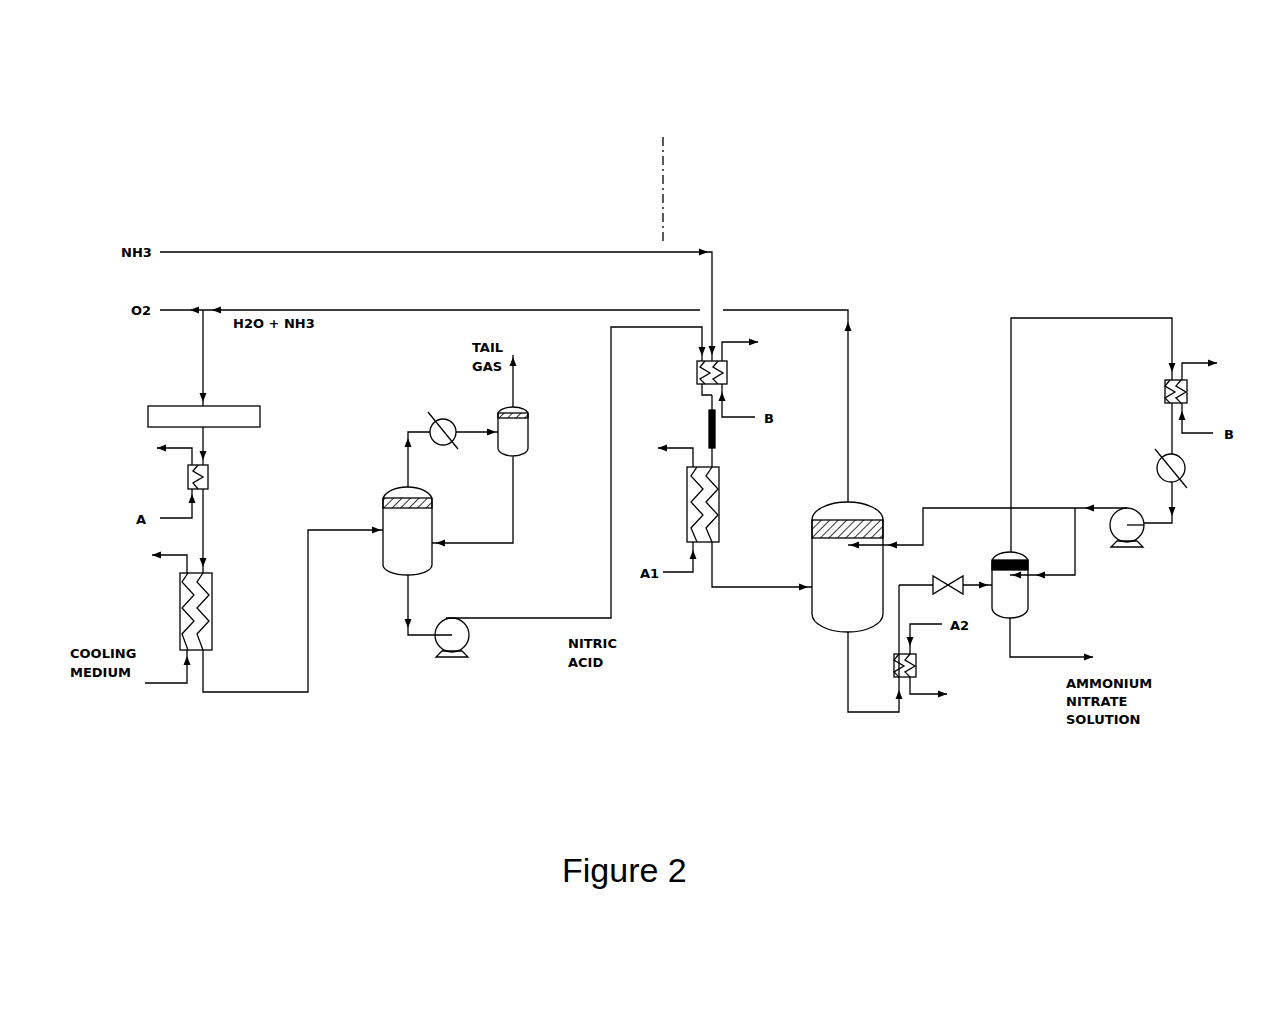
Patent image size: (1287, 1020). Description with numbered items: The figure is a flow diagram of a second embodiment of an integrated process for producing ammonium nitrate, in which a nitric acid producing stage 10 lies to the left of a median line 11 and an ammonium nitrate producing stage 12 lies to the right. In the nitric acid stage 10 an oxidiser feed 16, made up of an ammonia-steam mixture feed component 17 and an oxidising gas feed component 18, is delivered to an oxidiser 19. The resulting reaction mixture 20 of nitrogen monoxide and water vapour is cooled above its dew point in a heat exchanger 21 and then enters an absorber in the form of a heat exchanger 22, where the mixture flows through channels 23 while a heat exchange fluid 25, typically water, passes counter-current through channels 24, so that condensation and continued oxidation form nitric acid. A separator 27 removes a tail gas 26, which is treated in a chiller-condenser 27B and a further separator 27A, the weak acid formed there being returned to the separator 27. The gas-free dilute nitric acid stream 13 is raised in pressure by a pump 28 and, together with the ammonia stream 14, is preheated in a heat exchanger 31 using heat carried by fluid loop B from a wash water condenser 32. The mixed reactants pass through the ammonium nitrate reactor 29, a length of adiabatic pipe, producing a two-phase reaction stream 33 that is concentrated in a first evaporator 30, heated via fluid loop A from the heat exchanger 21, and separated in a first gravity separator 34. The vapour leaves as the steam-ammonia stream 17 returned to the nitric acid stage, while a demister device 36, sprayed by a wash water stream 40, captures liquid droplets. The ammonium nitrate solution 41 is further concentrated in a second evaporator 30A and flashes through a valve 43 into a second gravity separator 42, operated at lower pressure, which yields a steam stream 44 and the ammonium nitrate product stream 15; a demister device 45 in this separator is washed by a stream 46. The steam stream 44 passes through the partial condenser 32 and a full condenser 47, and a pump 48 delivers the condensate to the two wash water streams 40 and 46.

The nitric acid producing stage 10 is at (450, 196).
The median line 11 is at (670, 183).
The ammonium nitrate producing stage 12 is at (834, 180).
The dilute nitric acid stream 13 is at (607, 441).
The ammonia stream 14 is at (716, 278).
The ammonium nitrate product stream 15 is at (1063, 656).
The oxidiser feed 16 is at (200, 368).
The ammonia-steam mixture feed component 17 is at (402, 304).
The oxidising gas feed component 18 is at (187, 302).
The oxidiser 19 is at (170, 406).
The reaction mixture stream 20 is at (207, 441).
The heat exchanger 21 is at (212, 485).
The heat exchanger absorber 22 is at (212, 577).
The channels 23 is at (205, 606).
The channels 24 is at (185, 612).
The heat exchange fluid 25 is at (144, 686).
The tail gas 26 is at (405, 437).
The separator 27 is at (437, 525).
The further separator 27A is at (523, 456).
The chiller-condenser 27B is at (446, 418).
The pump 28 is at (455, 660).
The ammonium nitrate reactor 29 is at (707, 432).
The first evaporator 30 is at (722, 492).
The second evaporator 30A is at (912, 668).
The heat exchanger 31 is at (730, 374).
The wash water condenser 32 is at (1163, 393).
The reaction stream 33 is at (775, 597).
The first gravity separator 34 is at (878, 509).
The demister device 36 is at (825, 520).
The wash water stream 40 is at (955, 506).
The ammonium nitrate solution 41 is at (846, 674).
The second gravity separator 42 is at (1030, 602).
The valve 43 is at (951, 582).
The steam stream 44 is at (1013, 440).
The demister device 45 is at (1020, 556).
The wash water stream 46 is at (1077, 563).
The full condenser 47 is at (1190, 474).
The pump 48 is at (1145, 531).